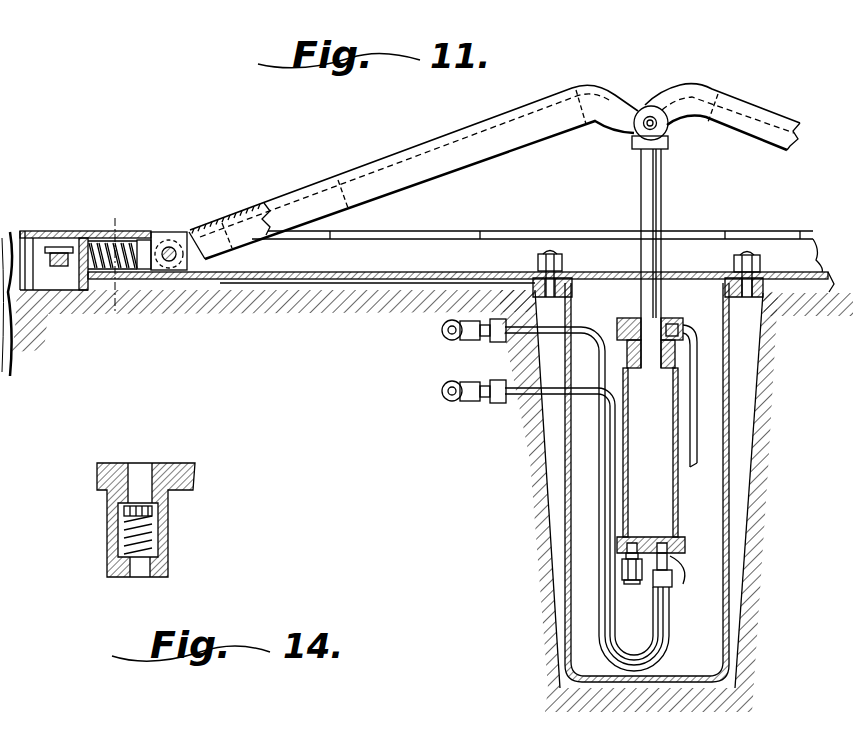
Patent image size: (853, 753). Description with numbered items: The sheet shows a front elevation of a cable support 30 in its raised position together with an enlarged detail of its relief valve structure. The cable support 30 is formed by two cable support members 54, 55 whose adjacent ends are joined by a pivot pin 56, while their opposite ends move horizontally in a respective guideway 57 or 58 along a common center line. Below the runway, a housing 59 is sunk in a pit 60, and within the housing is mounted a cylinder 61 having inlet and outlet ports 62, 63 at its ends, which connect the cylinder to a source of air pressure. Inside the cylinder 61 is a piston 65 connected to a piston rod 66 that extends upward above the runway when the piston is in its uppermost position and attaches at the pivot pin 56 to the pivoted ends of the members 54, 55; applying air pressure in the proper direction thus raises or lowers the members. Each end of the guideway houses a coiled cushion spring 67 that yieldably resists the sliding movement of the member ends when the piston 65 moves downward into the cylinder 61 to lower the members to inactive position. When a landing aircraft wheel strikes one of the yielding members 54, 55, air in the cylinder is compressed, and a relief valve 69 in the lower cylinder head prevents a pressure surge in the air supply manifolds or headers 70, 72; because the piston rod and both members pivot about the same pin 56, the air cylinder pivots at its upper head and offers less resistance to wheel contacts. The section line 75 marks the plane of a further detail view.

In FIG. 11, the cable support 30 is at (693, 159).
In FIG. 11, the cable support member 54 is at (428, 171).
In FIG. 11, the cable support member 55 is at (762, 117).
In FIG. 11, the pivot pin 56 is at (643, 128).
In FIG. 11, the guideway 57 is at (498, 253).
In FIG. 11, the guideway 58 is at (775, 249).
In FIG. 11, the housing 59 is at (729, 475).
In FIG. 11, the pit 60 is at (737, 520).
In FIG. 11, the cylinder 61 is at (623, 507).
In FIG. 11, the inlet and outlet port 62 is at (672, 330).
In FIG. 11, the inlet and outlet port 63 is at (680, 582).
In FIG. 11, the piston 65 is at (668, 365).
In FIG. 11, the piston rod 66 is at (662, 209).
In FIG. 11, the coiled cushion spring 67 is at (125, 242).
In FIG. 11, the relief valve 69 is at (623, 567).
In FIG. 14, the relief valve 69 is at (172, 522).
In FIG. 11, the air supply manifold 70 is at (447, 337).
In FIG. 11, the air supply manifold 72 is at (447, 400).
In FIG. 11, the section line 75 is at (115, 218).